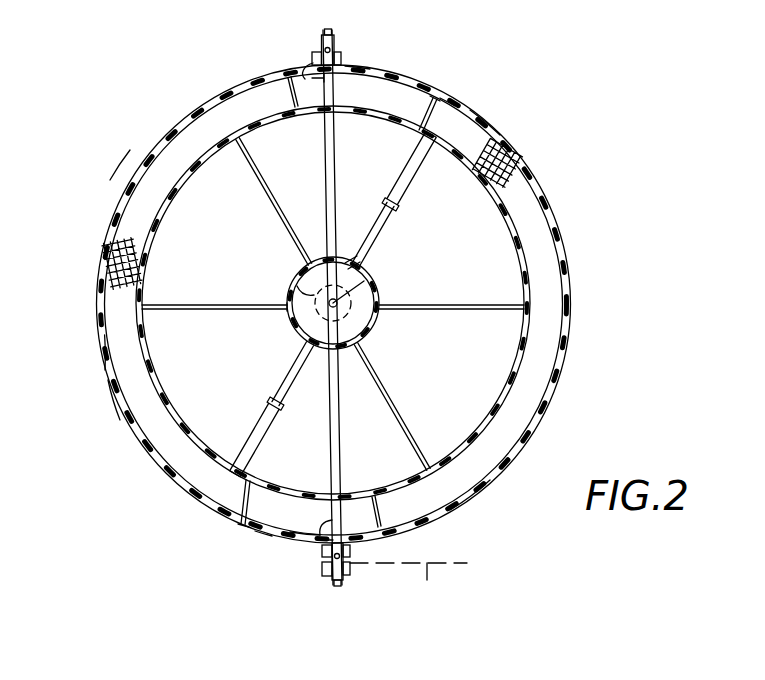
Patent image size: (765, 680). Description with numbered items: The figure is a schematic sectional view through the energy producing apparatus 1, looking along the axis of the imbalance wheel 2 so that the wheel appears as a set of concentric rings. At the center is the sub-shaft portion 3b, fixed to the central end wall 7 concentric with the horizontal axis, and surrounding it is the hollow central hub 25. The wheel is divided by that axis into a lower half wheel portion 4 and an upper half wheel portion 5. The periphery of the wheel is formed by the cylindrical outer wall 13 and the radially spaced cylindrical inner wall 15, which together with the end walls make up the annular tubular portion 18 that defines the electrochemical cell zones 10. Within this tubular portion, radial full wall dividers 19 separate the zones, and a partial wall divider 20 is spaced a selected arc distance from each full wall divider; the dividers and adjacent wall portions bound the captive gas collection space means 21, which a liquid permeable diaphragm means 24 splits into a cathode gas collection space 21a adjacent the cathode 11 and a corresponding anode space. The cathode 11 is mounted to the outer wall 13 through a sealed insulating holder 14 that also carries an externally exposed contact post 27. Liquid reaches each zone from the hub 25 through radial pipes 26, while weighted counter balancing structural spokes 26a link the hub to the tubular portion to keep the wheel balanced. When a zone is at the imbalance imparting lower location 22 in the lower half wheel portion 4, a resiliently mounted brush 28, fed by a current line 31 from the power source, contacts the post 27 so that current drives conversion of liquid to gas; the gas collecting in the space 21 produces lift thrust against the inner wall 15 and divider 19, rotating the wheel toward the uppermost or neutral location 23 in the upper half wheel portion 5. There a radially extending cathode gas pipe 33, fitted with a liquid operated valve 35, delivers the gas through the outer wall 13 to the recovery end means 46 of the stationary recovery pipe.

The energy producing apparatus 1 is at (142, 88).
The imbalance wheel 2 is at (115, 205).
The sub-shaft portion 3b is at (287, 280).
The lower half wheel portion 4 is at (470, 500).
The upper half wheel portion 5 is at (490, 128).
The central end wall 7 is at (347, 260).
The electrochemical cell zone 10 is at (560, 210).
The cathode 11 is at (309, 70).
The peripheral outer wall 13 is at (100, 358).
The insulating holder 14 is at (343, 58).
The peripheral inner wall 15 is at (148, 368).
The annular tubular portion 18 is at (106, 402).
The full wall divider 19 is at (450, 110).
The partial wall divider 20 is at (290, 93).
The captive gas collection space means 21 is at (428, 92).
The cathode gas collection space 21a is at (410, 82).
The imbalance imparting lower location 22 is at (302, 545).
The uppermost or neutral location 23 is at (362, 66).
The liquid permeable gas separating diaphragm means 24 is at (505, 165).
The hollow central hub 25 is at (288, 312).
The radial pipe 26 is at (405, 176).
The counter balancing structural spoke 26a is at (268, 212).
The contact post 27 is at (316, 48).
The brush 28 is at (324, 572).
The current line 31 is at (427, 580).
The cathode gas pipe 33 is at (339, 95).
The valve 35 is at (326, 30).
The recovery end means 46 is at (369, 280).